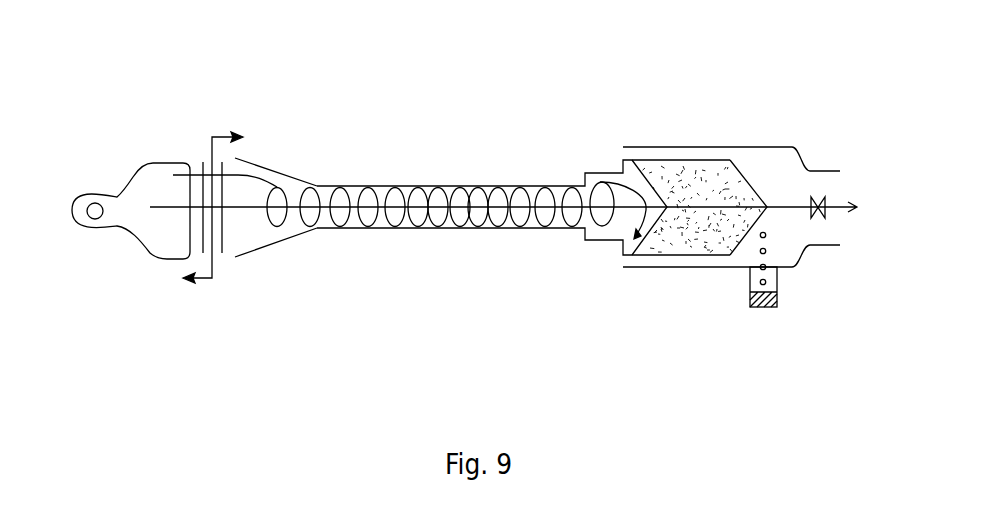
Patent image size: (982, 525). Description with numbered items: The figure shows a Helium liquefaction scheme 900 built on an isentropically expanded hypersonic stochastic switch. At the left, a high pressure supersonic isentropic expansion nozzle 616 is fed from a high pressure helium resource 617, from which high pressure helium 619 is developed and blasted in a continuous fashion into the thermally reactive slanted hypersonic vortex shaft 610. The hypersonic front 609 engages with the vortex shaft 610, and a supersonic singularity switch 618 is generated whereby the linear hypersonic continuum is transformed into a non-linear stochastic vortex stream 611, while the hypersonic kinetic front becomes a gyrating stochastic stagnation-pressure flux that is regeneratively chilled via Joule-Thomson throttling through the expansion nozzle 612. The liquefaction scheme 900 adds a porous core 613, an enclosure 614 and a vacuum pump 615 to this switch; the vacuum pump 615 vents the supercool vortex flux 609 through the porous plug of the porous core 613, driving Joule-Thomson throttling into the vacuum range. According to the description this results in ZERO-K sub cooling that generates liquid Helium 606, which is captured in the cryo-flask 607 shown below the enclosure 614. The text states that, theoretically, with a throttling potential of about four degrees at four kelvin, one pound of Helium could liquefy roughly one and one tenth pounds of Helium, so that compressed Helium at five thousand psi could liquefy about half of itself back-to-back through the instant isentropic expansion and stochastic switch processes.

The Helium liquefaction scheme 900 is at (146, 369).
The liquid Helium 606 is at (778, 245).
The cryo-flask 607 is at (762, 308).
The hypersonic front 609 is at (225, 138).
The thermally reactive slanted hypersonic vortex shaft 610 is at (287, 167).
The non-linear stochastic vortex stream 611 is at (446, 186).
The expansion nozzle 612 is at (591, 173).
The porous core 613 is at (753, 180).
The enclosure 614 is at (797, 148).
The vacuum pump 615 is at (822, 197).
The high pressure supersonic isentropic expansion nozzle 616 is at (140, 164).
The high pressure helium resource 617 is at (95, 214).
The supersonic singularity switch 618 is at (222, 257).
The high pressure helium 619 is at (168, 162).